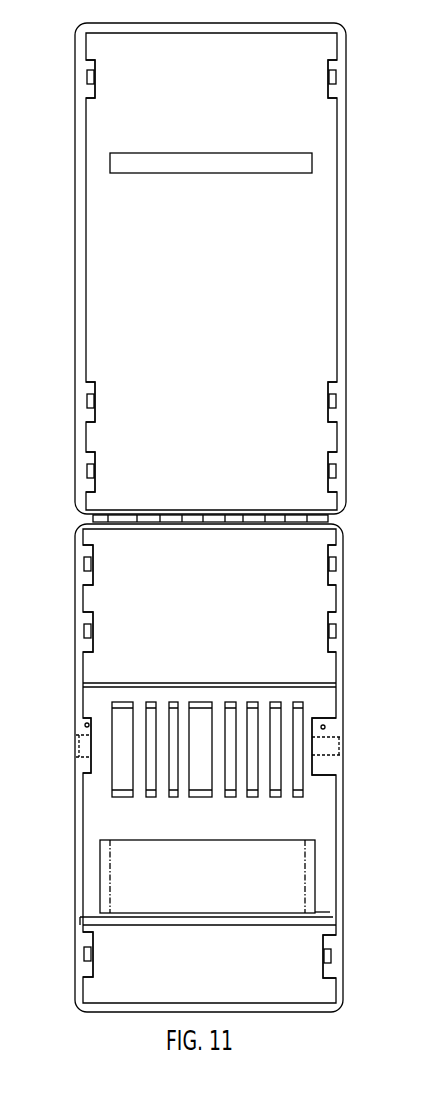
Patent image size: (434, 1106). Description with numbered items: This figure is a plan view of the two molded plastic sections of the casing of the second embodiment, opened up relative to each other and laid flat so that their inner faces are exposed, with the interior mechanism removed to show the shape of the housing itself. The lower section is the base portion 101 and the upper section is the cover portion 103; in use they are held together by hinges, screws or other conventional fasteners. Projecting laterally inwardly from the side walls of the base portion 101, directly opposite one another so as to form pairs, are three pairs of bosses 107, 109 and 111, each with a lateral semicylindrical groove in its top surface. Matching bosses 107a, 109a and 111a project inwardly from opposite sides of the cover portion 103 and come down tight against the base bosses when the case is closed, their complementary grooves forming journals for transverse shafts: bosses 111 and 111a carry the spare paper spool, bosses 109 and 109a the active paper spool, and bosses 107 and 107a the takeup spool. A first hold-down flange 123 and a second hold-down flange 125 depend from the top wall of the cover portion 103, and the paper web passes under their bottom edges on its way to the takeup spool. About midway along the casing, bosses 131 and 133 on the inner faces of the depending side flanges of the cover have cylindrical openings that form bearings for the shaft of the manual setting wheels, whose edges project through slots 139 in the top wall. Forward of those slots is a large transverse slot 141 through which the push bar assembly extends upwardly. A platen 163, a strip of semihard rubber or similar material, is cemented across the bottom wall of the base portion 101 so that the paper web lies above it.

The base portion 101 is at (345, 255).
The cover portion 103 is at (77, 671).
The bosses 107 is at (95, 62).
The bosses 107a is at (93, 945).
The bosses 109 is at (95, 386).
The bosses 109a is at (93, 619).
The bosses 111 is at (95, 461).
The bosses 111a is at (93, 552).
The first hold-down flange 123 is at (317, 684).
The second hold-down flange 125 is at (240, 918).
The boss 131 is at (90, 767).
The boss 133 is at (325, 763).
The slots 139 is at (174, 702).
The transverse slot 141 is at (165, 840).
The platen 163 is at (170, 153).